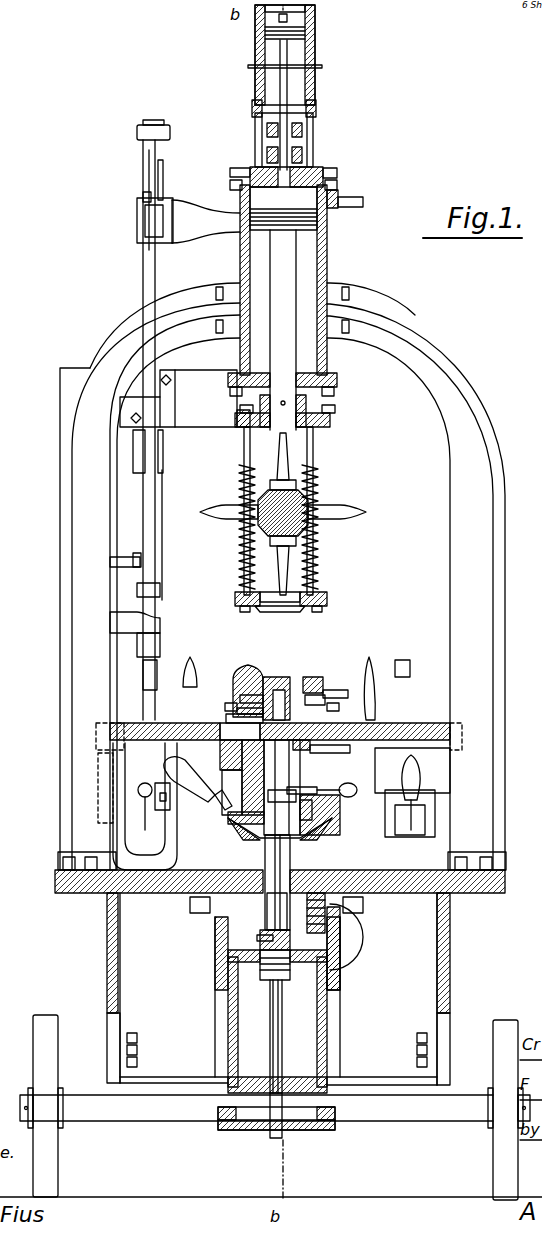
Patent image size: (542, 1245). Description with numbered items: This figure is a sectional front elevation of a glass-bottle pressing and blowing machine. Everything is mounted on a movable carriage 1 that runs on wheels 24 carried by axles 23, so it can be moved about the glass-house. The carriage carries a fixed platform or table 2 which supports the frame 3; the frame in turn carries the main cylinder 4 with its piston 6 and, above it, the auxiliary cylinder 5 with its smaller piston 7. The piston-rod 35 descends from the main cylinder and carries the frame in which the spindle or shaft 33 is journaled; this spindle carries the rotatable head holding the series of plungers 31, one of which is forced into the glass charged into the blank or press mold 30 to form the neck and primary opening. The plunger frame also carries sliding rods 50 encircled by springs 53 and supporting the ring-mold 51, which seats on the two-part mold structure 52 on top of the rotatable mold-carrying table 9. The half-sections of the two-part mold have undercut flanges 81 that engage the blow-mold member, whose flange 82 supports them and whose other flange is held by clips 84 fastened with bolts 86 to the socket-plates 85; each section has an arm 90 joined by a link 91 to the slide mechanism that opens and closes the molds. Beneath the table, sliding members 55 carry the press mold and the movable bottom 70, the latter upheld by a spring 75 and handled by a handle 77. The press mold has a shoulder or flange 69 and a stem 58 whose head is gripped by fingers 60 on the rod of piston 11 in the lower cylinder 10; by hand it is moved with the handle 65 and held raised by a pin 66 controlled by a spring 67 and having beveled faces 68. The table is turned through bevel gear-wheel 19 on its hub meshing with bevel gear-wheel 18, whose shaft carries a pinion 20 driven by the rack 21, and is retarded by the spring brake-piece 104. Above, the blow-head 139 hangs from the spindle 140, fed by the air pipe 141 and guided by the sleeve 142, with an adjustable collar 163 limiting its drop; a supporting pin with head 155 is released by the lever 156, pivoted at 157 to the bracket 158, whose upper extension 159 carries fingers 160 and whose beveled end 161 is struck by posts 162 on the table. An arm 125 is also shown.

The carriage 1 is at (119, 946).
The fixed platform or table 2 is at (220, 870).
The frame 3 is at (282, 576).
The main cylinder 4 is at (250, 280).
The auxiliary cylinder 5 is at (285, 61).
The piston 6 is at (310, 212).
The piston 7 is at (305, 34).
The mold-carrying table 9 is at (279, 727).
The lower cylinder 10 is at (277, 1018).
The piston 11 is at (255, 1077).
The bevel gear-wheel 18 is at (340, 937).
The bevel gear-wheel 19 is at (326, 700).
The pinion 20 is at (308, 913).
The rack 21 is at (284, 1011).
The axles 23 is at (275, 1108).
The wheels 24 is at (275, 1107).
The blank or press mold 30 is at (280, 705).
The plungers 31 is at (222, 506).
The spindle or shaft 33 is at (283, 513).
The piston-rod 35 is at (283, 235).
The sliding rods 50 is at (244, 449).
The ring-mold 51 is at (285, 613).
The two-part mold structure 52 is at (283, 677).
The springs 53 is at (240, 572).
The sliding members 55 is at (225, 748).
The stem 58 is at (300, 152).
The fingers 60 is at (266, 848).
The handle 65 is at (144, 796).
The pin 66 is at (150, 830).
The spring 67 is at (171, 803).
The beveled faces 68 is at (277, 911).
The shoulder or flange 69 is at (350, 751).
The movable bottom 70 is at (223, 755).
The spring 75 is at (242, 768).
The handle 77 is at (292, 792).
The undercut flanges 81 is at (280, 441).
The flange 82 is at (240, 698).
The clips 84 is at (340, 711).
The socket-plates 85 is at (246, 717).
The bolts 86 is at (228, 718).
The side projection or arm 90 is at (250, 665).
The link 91 is at (310, 676).
The spring brake-piece 104 is at (98, 790).
The bracket arm 125 is at (206, 221).
The blow-head 139 is at (160, 614).
The spindle 140 is at (143, 288).
The pipe 141 is at (130, 552).
The sleeve 142 is at (163, 440).
The head 155 is at (150, 226).
The lever 156 is at (163, 565).
The pivot 157 is at (178, 412).
The bracket 158 is at (132, 411).
The upper extension 159 is at (160, 190).
The fingers 160 is at (143, 206).
The beveled end 161 is at (191, 663).
The posts 162 is at (155, 669).
The adjustable collar 163 is at (164, 368).